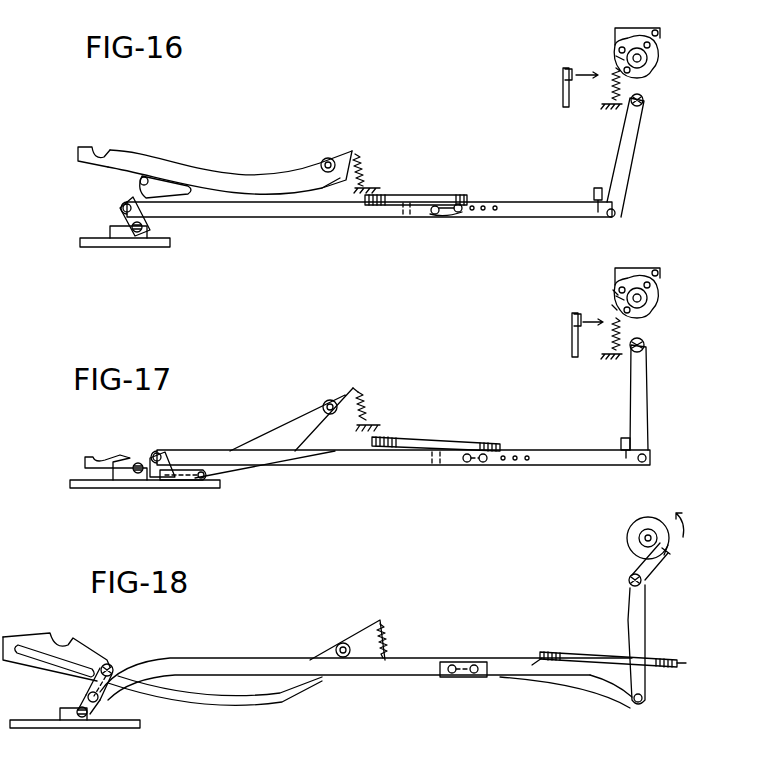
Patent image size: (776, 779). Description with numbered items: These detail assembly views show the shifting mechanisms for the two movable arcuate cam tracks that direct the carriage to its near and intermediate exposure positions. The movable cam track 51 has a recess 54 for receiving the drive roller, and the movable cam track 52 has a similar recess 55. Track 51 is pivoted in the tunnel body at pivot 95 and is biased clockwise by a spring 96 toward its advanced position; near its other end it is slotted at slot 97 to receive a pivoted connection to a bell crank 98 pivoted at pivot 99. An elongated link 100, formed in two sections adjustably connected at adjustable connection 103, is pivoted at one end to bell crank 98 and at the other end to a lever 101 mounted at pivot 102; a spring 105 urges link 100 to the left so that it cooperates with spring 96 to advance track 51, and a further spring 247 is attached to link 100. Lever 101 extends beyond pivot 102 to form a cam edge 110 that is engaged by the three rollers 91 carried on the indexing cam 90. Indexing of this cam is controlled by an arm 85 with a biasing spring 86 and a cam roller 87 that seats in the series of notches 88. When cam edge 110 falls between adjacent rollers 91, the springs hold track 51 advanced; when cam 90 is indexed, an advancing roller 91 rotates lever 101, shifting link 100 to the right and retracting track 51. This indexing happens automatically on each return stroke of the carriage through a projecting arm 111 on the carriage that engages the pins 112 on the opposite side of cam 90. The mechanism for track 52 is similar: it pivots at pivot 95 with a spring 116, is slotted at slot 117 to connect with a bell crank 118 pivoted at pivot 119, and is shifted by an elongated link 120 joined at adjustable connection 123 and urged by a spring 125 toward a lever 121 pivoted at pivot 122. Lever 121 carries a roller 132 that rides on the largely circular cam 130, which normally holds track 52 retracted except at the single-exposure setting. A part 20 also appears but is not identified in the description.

In FIG. 16, the base plate 20 is at (107, 243).
In FIG. 17, the base plate 20 is at (92, 484).
In FIG. 16, the movable cam track 51 is at (262, 184).
In FIG. 17, the movable cam track 51 is at (290, 433).
In FIG. 18, the movable cam track 52 is at (222, 695).
In FIG. 16, the recess 54 is at (100, 146).
In FIG. 17, the recess 54 is at (105, 460).
In FIG. 18, the recess 55 is at (66, 640).
In FIG. 16, the arm 85 is at (620, 33).
In FIG. 17, the arm 85 is at (627, 270).
In FIG. 16, the biasing spring 86 is at (612, 70).
In FIG. 17, the biasing spring 86 is at (613, 337).
In FIG. 16, the cam roller 87 is at (637, 28).
In FIG. 17, the cam roller 87 is at (641, 270).
In FIG. 16, the notches 88 is at (656, 46).
In FIG. 17, the notches 88 is at (660, 312).
In FIG. 16, the indexing cam 90 is at (655, 86).
In FIG. 17, the indexing cam 90 is at (666, 294).
In FIG. 16, the rollers 91 is at (614, 48).
In FIG. 17, the rollers 91 is at (633, 270).
In FIG. 16, the pivot 95 is at (322, 158).
In FIG. 17, the pivot 95 is at (327, 402).
In FIG. 18, the pivot 95 is at (342, 643).
In FIG. 16, the spring 96 is at (361, 163).
In FIG. 17, the spring 96 is at (366, 408).
In FIG. 16, the slot 97 is at (172, 178).
In FIG. 17, the slot 97 is at (205, 484).
In FIG. 16, the bell crank 98 is at (128, 191).
In FIG. 17, the bell crank 98 is at (153, 482).
In FIG. 16, the pivot 99 is at (138, 233).
In FIG. 17, the pivot 99 is at (138, 462).
In FIG. 16, the elongated link 100 is at (310, 216).
In FIG. 17, the elongated link 100 is at (328, 466).
In FIG. 16, the lever 101 is at (631, 152).
In FIG. 17, the lever 101 is at (645, 410).
In FIG. 16, the pivot 102 is at (643, 106).
In FIG. 17, the pivot 102 is at (646, 357).
In FIG. 16, the adjustable connection 103 is at (452, 218).
In FIG. 17, the adjustable connection 103 is at (485, 463).
In FIG. 16, the spring 105 is at (435, 196).
In FIG. 17, the spring 105 is at (438, 440).
In FIG. 17, the cam edge 110 is at (613, 308).
In FIG. 16, the projecting arm 111 is at (566, 68).
In FIG. 17, the projecting arm 111 is at (573, 318).
In FIG. 17, the pins 112 is at (613, 293).
In FIG. 18, the spring 116 is at (390, 650).
In FIG. 18, the slot 117 is at (79, 662).
In FIG. 18, the bell crank 118 is at (88, 685).
In FIG. 18, the pivot 119 is at (83, 720).
In FIG. 18, the elongated link 120 is at (383, 672).
In FIG. 18, the lever 121 is at (640, 617).
In FIG. 18, the pivot 122 is at (629, 580).
In FIG. 18, the adjustable connection 123 is at (467, 678).
In FIG. 18, the spring 125 is at (663, 668).
In FIG. 18, the cam 130 is at (633, 532).
In FIG. 18, the roller 132 is at (667, 550).
In FIG. 16, the spring 247 is at (594, 190).
In FIG. 17, the spring 247 is at (622, 442).